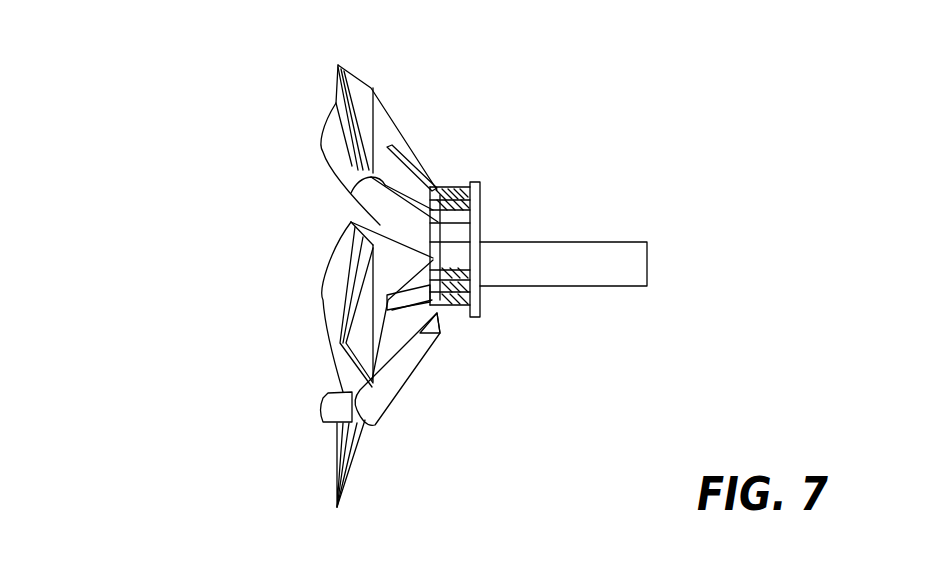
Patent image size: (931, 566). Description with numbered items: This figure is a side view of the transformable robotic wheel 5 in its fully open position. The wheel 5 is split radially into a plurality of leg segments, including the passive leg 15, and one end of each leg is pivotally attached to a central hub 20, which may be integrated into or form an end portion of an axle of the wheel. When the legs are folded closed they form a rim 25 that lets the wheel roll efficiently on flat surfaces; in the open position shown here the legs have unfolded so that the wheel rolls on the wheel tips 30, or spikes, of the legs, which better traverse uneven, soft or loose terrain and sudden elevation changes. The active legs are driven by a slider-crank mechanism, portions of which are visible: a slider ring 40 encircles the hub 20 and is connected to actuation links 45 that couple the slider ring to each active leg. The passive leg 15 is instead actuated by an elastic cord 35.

The transformable robotic wheel 5 is at (178, 63).
The passive leg 15 is at (328, 403).
The central hub 20 is at (632, 265).
The rim 25 is at (358, 90).
The wheel tips 30 is at (347, 473).
The elastic cord 35 is at (415, 245).
The slider ring 40 is at (475, 295).
The actuation links 45 is at (438, 192).